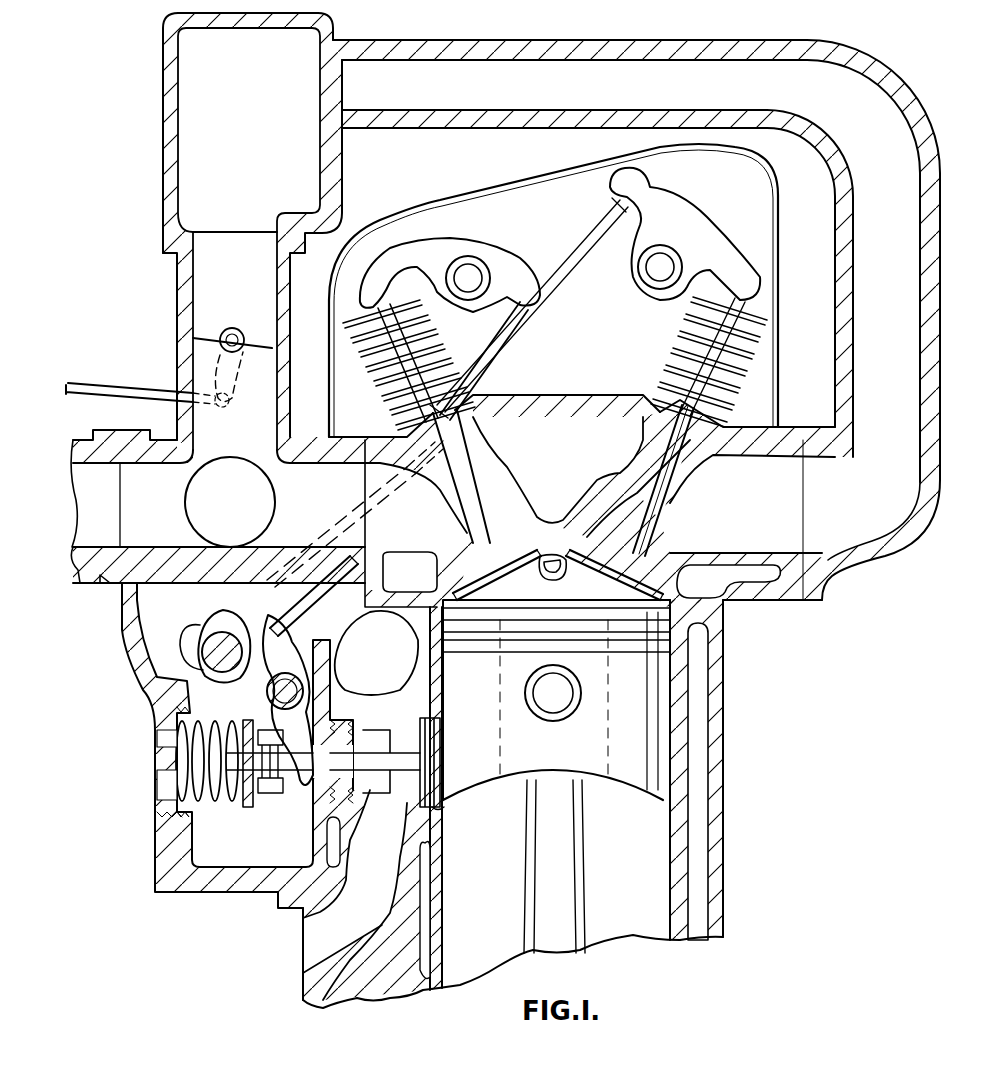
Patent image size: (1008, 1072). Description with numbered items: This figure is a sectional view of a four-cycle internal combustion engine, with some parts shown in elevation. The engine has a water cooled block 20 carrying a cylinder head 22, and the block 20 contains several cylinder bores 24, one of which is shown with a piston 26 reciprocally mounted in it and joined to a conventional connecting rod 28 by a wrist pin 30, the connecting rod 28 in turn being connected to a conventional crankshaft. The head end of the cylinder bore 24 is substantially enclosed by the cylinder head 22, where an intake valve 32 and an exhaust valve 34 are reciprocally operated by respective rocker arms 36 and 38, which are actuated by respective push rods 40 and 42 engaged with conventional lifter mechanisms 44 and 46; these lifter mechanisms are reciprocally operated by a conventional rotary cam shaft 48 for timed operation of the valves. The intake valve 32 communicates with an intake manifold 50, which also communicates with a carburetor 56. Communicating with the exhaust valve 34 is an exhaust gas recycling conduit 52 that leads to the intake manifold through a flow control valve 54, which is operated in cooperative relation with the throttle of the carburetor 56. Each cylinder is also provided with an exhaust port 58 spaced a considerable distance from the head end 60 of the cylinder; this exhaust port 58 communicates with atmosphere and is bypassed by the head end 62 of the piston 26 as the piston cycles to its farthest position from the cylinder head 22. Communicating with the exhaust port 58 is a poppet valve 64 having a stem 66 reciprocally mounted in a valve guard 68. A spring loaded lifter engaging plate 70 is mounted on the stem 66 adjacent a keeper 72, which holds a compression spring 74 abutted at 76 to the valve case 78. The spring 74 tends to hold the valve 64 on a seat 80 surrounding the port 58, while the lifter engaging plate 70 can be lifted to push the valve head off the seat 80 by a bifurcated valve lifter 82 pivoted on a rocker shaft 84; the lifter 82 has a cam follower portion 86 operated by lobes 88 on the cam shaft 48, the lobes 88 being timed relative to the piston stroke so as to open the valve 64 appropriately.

The water cooled block 20 is at (729, 642).
The cylinder head 22 is at (785, 596).
The cylinder bore 24 is at (722, 792).
The piston 26 is at (653, 727).
The connecting rod 28 is at (590, 840).
The wrist pin 30 is at (530, 703).
The intake valve 32 is at (540, 550).
The exhaust valve 34 is at (652, 562).
The rocker arm 36 is at (500, 266).
The rocker arm 38 is at (715, 250).
The push rod 40 is at (503, 342).
The push rod 42 is at (578, 252).
The lifter mechanism 44 is at (278, 557).
The lifter mechanism 46 is at (318, 590).
The rotary cam shaft 48 is at (192, 652).
The intake manifold 50 is at (190, 522).
The exhaust gas recycling conduit 52 is at (892, 270).
The flow control valve 54 is at (210, 328).
The carburetor 56 is at (110, 504).
The exhaust port 58 is at (438, 758).
The head end of cylinder 60 is at (510, 580).
The head end of piston 62 is at (593, 590).
The poppet valve 64 is at (418, 832).
The stem 66 is at (372, 797).
The valve guard 68 is at (356, 720).
The lifter engaging plate 70 is at (266, 794).
The keeper 72 is at (248, 806).
The compression spring 74 is at (220, 800).
The spring abutment 76 is at (155, 775).
The valve case 78 is at (155, 742).
The seat 80 is at (441, 810).
The bifurcated valve lifter 82 is at (300, 782).
The rocker shaft 84 is at (266, 692).
The cam follower portion 86 is at (280, 646).
The lobes 88 is at (225, 612).